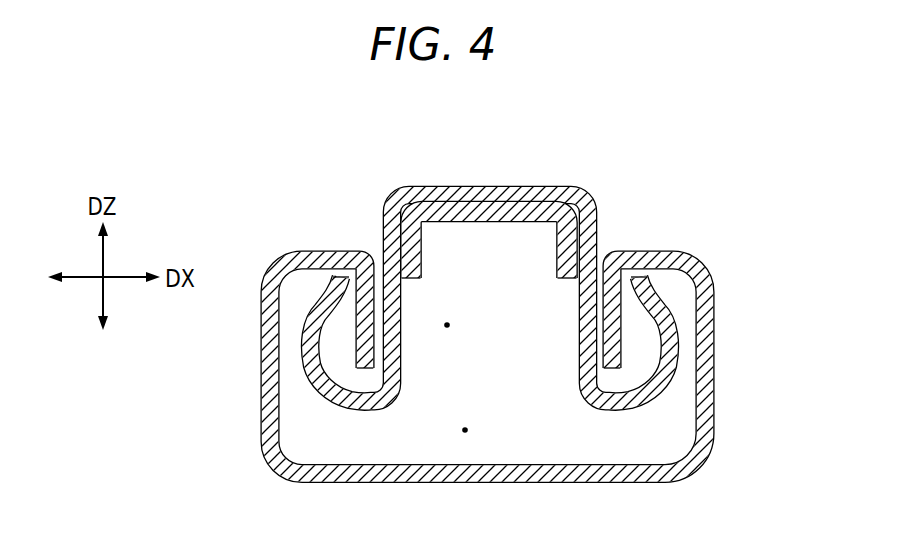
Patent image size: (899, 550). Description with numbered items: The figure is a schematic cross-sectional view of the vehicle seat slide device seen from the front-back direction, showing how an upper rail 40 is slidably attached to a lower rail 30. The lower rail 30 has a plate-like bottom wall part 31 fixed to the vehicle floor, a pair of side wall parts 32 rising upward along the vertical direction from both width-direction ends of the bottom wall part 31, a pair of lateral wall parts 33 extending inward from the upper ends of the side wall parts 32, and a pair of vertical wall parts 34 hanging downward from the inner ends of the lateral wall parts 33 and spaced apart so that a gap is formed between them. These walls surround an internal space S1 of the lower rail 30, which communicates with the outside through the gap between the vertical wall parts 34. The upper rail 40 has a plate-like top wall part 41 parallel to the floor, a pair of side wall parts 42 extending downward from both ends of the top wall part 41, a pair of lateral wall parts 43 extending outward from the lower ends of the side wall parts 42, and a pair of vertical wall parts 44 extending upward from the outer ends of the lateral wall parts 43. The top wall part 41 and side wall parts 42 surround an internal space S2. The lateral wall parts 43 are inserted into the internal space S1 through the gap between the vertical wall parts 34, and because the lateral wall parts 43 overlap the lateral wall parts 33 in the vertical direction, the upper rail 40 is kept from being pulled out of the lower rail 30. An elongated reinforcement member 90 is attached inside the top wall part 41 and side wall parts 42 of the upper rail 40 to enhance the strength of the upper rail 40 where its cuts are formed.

The lower rail 30 is at (660, 483).
The bottom wall part 31 is at (445, 482).
The side wall parts 32 is at (264, 409).
The lateral wall parts 33 is at (333, 251).
The vertical wall parts 34 is at (356, 320).
The upper rail 40 is at (576, 186).
The top wall part 41 is at (522, 186).
The side wall parts 42 is at (383, 232).
The lateral wall parts 43 is at (350, 409).
The vertical wall parts 44 is at (303, 323).
The reinforcement member 90 is at (452, 221).
The internal space S1 is at (465, 430).
The internal space S2 is at (447, 325).